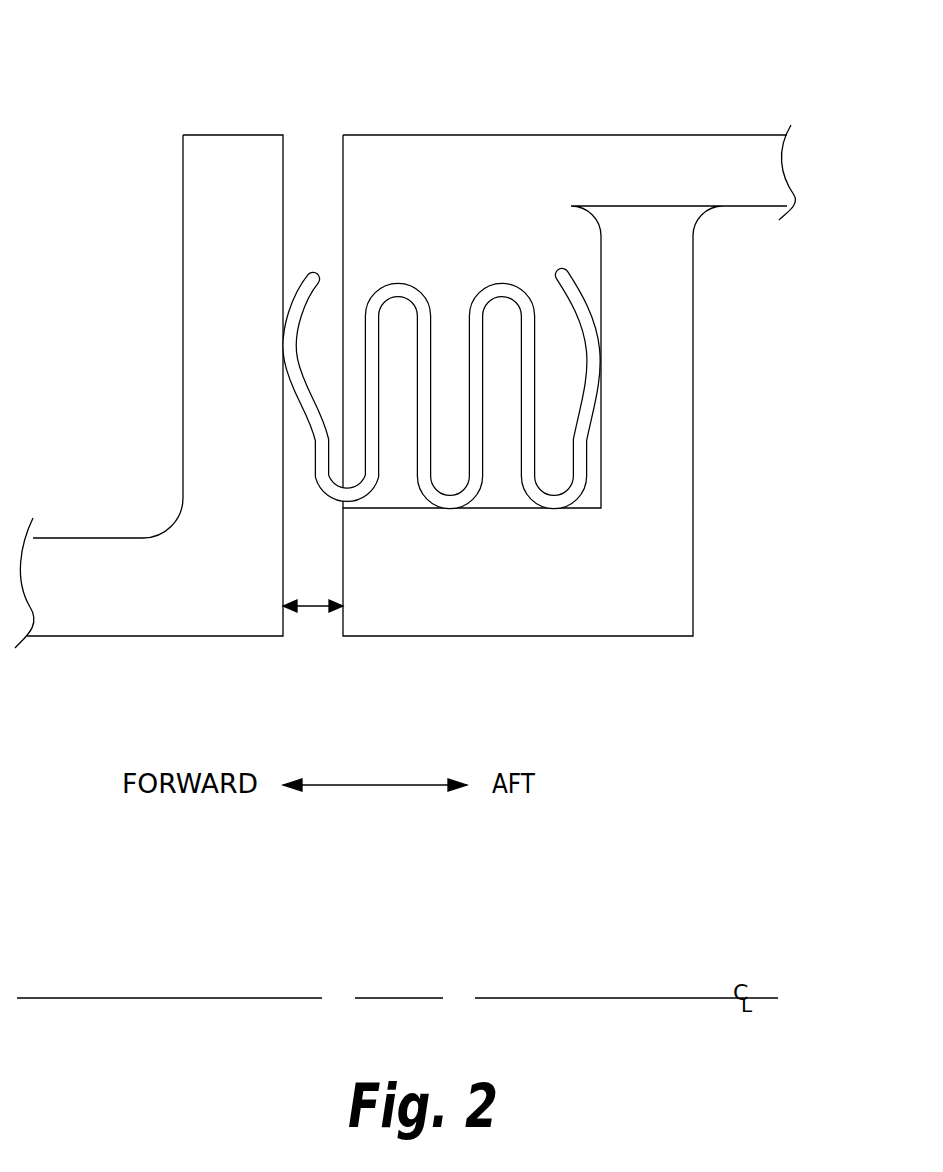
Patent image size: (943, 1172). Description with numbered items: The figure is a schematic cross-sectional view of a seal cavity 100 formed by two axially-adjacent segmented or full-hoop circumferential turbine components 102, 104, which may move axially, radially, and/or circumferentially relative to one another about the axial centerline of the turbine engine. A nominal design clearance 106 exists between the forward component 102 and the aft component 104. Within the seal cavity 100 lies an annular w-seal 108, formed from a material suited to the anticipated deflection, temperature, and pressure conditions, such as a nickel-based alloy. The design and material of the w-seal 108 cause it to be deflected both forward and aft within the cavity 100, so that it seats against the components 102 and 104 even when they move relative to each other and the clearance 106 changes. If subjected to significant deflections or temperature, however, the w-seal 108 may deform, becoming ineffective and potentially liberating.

The seal cavity 100 is at (445, 247).
The turbine component 102 is at (145, 636).
The turbine component 104 is at (517, 636).
The nominal design clearance 106 is at (310, 606).
The w-seal 108 is at (536, 357).